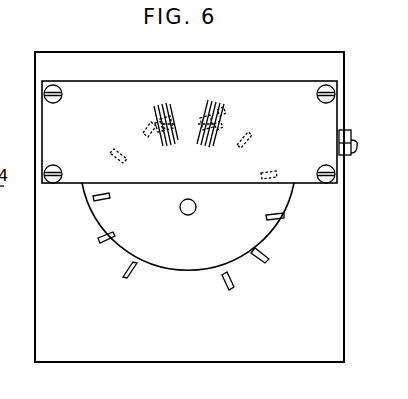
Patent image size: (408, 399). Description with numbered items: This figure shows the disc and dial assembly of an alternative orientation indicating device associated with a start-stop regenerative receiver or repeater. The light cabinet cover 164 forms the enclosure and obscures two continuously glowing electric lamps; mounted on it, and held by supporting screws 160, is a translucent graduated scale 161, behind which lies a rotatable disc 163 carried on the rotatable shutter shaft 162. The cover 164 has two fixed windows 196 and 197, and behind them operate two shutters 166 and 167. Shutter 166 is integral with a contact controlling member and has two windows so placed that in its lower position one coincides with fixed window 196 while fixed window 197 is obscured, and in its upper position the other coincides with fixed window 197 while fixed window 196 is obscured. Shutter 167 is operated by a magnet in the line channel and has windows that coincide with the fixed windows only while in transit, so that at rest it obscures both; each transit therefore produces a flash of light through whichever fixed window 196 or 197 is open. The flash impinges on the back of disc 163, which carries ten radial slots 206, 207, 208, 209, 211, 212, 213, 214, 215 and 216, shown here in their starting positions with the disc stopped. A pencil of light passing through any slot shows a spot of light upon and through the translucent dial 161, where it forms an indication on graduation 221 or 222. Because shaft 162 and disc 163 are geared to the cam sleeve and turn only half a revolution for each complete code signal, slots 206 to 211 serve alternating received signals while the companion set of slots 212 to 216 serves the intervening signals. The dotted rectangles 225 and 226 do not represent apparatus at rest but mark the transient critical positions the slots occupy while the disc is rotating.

The supporting screws 160 is at (335, 92).
The translucent graduated scale 161 is at (332, 118).
The rotatable shutter shaft 162 is at (194, 212).
The slotted disc 163 is at (286, 253).
The light cabinet cover 164 is at (339, 318).
The shutter 166 is at (350, 138).
The shutter 167 is at (356, 151).
The fixed window 196 is at (178, 113).
The fixed window 197 is at (219, 125).
The radial slot 206 is at (252, 146).
The radial slot 207 is at (277, 175).
The radial slot 208 is at (281, 218).
The radial slot 209 is at (257, 260).
The radial slot 211 is at (236, 287).
The radial slot 212 is at (131, 279).
The radial slot 213 is at (108, 242).
The radial slot 214 is at (103, 197).
The radial slot 215 is at (112, 157).
The radial slot 216 is at (143, 135).
The graduation 221 is at (162, 109).
The graduation 222 is at (219, 100).
The dotted rectangle 225 is at (214, 112).
The dotted rectangle 226 is at (163, 113).